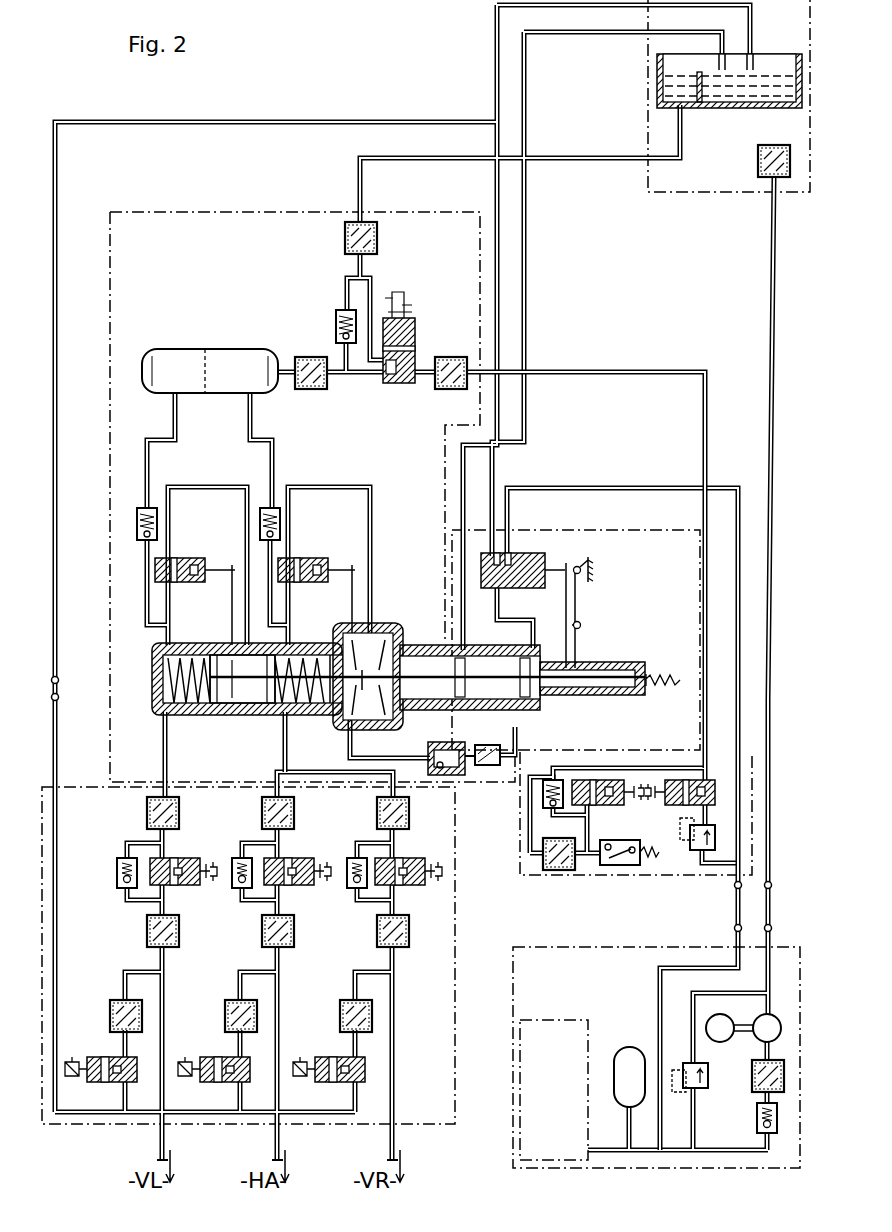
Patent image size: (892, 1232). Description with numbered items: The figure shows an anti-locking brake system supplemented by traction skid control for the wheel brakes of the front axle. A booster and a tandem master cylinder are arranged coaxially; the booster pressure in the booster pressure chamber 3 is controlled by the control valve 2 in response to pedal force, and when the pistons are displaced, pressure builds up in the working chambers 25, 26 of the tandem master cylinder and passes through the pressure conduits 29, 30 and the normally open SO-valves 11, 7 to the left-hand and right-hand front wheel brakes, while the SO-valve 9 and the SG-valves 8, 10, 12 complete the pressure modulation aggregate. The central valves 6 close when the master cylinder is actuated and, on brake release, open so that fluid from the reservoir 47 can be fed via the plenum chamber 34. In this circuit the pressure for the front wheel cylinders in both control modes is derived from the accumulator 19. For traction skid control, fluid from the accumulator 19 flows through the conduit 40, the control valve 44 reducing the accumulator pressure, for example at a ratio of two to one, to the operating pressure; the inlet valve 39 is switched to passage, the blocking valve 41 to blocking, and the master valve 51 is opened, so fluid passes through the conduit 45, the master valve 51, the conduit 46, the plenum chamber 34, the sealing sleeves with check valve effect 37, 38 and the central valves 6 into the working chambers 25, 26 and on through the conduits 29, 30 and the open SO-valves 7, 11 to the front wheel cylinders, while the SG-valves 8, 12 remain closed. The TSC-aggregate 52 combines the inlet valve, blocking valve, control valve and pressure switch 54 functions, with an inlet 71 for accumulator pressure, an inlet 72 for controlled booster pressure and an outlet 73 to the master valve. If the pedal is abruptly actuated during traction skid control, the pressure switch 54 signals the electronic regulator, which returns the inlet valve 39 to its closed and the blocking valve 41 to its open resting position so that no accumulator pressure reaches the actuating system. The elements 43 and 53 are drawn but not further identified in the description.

The control valve 2 is at (540, 553).
The booster pressure chamber 3 is at (535, 720).
The central valves 6 is at (202, 560).
The SO-valve 7 is at (413, 858).
The SG-valve 8 is at (336, 1056).
The SO-valve 9 is at (300, 858).
The SG-valve 10 is at (222, 1056).
The SO-valve 11 is at (187, 858).
The SG-valve 12 is at (105, 1056).
The accumulator 19 is at (630, 1060).
The working chamber 25 is at (305, 703).
The working chamber 26 is at (191, 703).
The pressure conduit 29 is at (165, 741).
The pressure conduit 30 is at (285, 741).
The plenum chamber 34 is at (190, 360).
The sealing sleeve with check valve effect 37 is at (280, 524).
The sealing sleeve with check valve effect 38 is at (157, 524).
The inlet valve 39 is at (683, 805).
The conduit 40 is at (656, 1044).
The blocking valve 41 is at (601, 805).
The check valve 43 is at (543, 798).
The control valve 44 is at (702, 850).
The conduit 45 is at (705, 429).
The conduit 46 is at (338, 346).
The reservoir 47 is at (657, 71).
The master valve 51 is at (403, 384).
The TSC-aggregate 52 is at (575, 872).
The valve block 53 is at (455, 916).
The pressure switch 54 is at (620, 866).
The inlet for accumulator pressure 71 is at (737, 886).
The inlet for controlled booster pressure 72 is at (562, 764).
The outlet to the master valve 73 is at (698, 752).